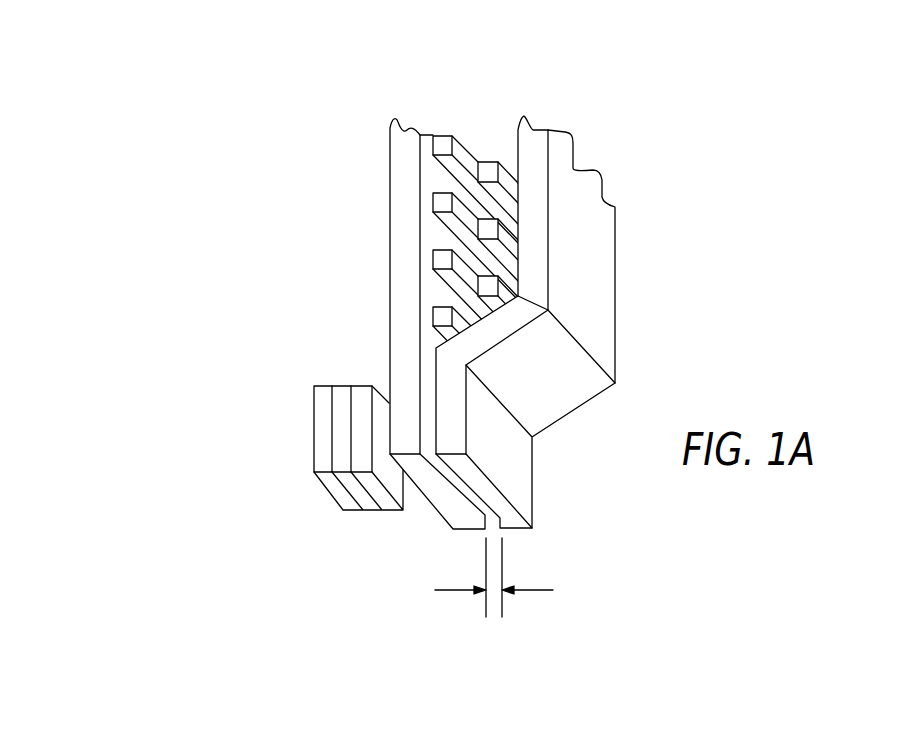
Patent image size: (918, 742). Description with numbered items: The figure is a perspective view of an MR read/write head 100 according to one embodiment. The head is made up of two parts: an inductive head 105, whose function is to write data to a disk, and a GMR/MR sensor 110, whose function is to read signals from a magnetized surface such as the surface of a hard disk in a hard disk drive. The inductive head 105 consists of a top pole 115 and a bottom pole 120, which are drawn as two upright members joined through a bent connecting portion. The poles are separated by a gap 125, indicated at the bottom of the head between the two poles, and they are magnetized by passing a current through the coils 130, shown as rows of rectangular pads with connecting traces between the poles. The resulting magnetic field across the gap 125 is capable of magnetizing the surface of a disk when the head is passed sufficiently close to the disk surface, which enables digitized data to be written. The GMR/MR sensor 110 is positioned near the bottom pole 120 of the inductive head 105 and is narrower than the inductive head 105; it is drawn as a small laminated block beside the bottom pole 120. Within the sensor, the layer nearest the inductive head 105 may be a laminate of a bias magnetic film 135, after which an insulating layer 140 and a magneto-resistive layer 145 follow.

The MR read/write head 100 is at (278, 230).
The inductive head 105 is at (450, 118).
The GMR/MR sensor 110 is at (293, 442).
The top pole 115 is at (533, 157).
The bottom pole 120 is at (389, 179).
The gap 125 is at (493, 603).
The coils 130 is at (490, 161).
The bias magnetic film 135 is at (391, 493).
The insulating layer 140 is at (343, 386).
The magneto-resistive layer 145 is at (325, 386).